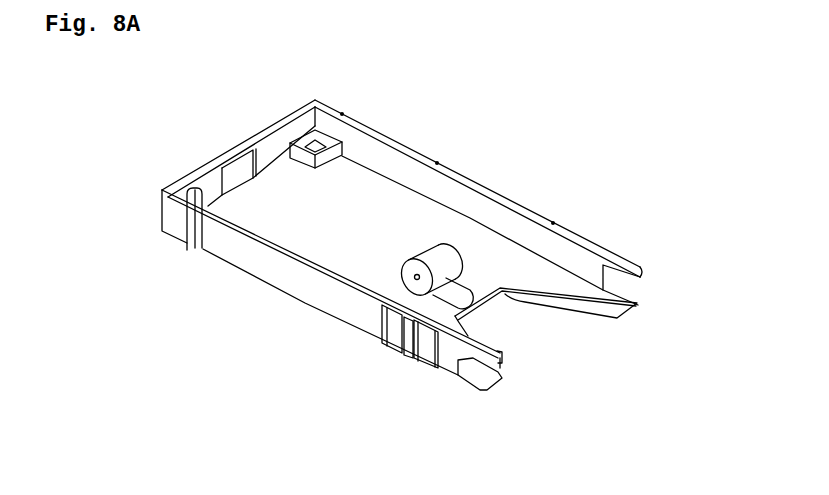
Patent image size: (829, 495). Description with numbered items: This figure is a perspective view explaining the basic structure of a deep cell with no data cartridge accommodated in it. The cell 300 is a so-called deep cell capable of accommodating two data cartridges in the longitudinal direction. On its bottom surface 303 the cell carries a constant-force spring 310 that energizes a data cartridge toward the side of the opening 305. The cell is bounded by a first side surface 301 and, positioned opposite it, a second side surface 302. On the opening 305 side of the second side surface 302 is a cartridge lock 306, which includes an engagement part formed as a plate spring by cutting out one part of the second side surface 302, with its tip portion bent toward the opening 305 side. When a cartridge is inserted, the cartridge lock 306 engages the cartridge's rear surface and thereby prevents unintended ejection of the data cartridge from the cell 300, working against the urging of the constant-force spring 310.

The cell 300 is at (383, 130).
The first side surface 301 is at (445, 167).
The second side surface 302 is at (285, 277).
The bottom surface 303 is at (528, 304).
The opening 305 is at (561, 358).
The cartridge lock 306 is at (502, 378).
The constant-force spring 310 is at (440, 262).